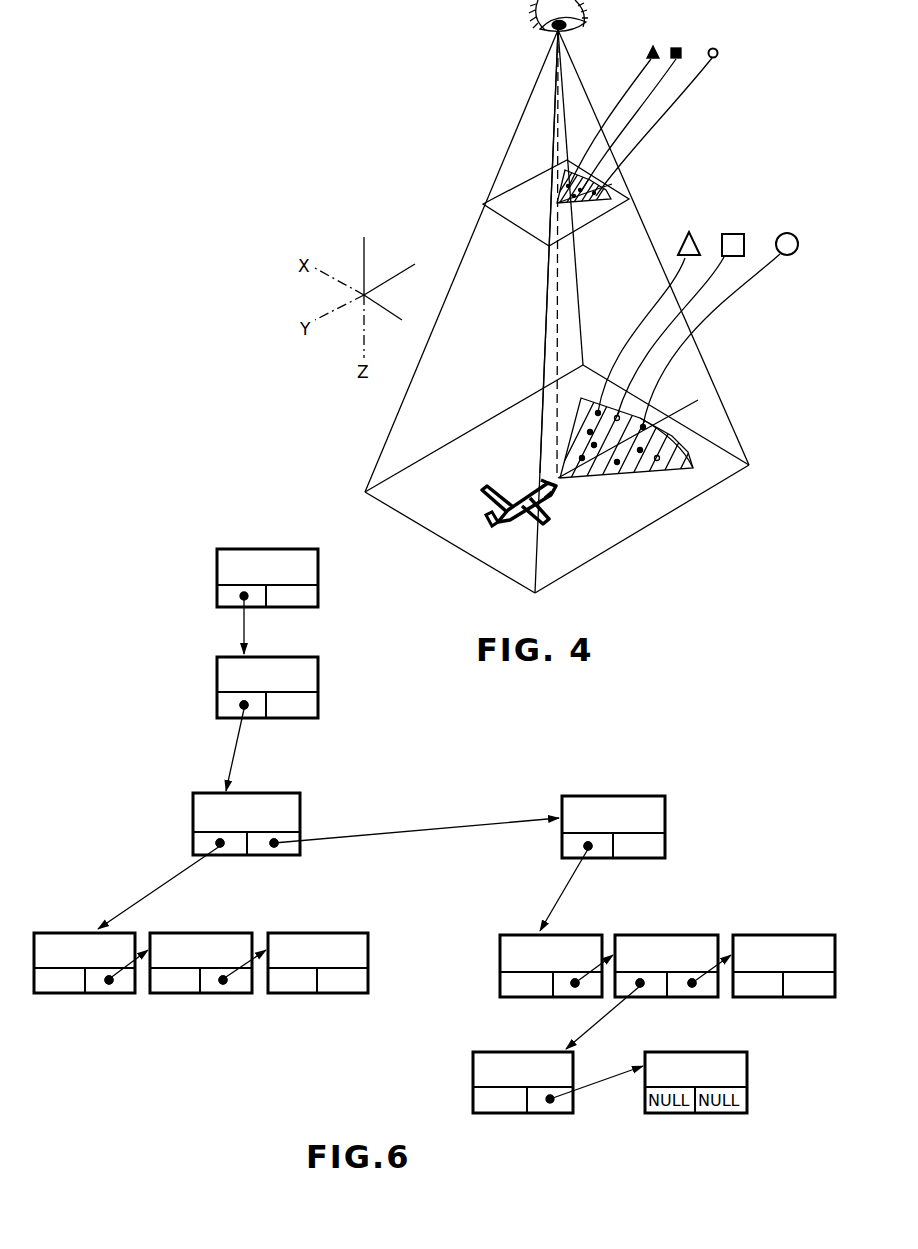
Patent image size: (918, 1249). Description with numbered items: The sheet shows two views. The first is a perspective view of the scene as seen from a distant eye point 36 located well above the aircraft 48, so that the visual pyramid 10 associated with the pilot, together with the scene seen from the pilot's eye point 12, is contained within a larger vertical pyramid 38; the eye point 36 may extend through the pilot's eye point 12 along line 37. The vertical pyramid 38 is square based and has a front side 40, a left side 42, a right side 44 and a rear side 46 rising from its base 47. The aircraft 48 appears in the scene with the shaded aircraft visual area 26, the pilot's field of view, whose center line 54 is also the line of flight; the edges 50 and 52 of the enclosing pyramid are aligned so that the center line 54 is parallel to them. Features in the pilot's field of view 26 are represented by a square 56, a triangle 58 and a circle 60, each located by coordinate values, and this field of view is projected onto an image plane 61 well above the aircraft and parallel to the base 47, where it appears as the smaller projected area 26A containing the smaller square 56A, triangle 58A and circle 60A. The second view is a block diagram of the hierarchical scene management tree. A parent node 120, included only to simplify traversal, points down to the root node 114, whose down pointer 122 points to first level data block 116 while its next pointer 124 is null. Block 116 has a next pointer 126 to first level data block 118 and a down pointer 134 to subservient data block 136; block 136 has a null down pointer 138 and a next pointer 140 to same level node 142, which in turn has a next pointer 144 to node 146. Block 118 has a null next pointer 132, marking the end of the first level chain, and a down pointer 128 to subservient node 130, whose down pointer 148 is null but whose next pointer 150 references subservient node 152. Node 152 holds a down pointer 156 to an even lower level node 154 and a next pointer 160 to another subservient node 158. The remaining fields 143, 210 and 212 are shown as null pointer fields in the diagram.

In FIG. 4, the visual pyramid 10 is at (582, 387).
In FIG. 4, the pilot's eye point 12 is at (559, 484).
In FIG. 4, the aircraft visual area 26 is at (645, 470).
In FIG. 4, the projected field of view 26A is at (612, 176).
In FIG. 4, the eye point 36 is at (576, 22).
In FIG. 4, the line 37 is at (562, 325).
In FIG. 4, the vertical pyramid 38 is at (669, 230).
In FIG. 4, the front side 40 is at (686, 424).
In FIG. 4, the left side 42 is at (434, 333).
In FIG. 4, the right side 44 is at (688, 347).
In FIG. 4, the rear side 46 is at (417, 490).
In FIG. 4, the base 47 is at (547, 570).
In FIG. 4, the aircraft 48 is at (494, 527).
In FIG. 4, the edge 50 is at (470, 432).
In FIG. 4, the edge 52 is at (587, 562).
In FIG. 4, the center line 54 is at (684, 416).
In FIG. 4, the square 56 is at (742, 240).
In FIG. 4, the triangle 58 is at (701, 238).
In FIG. 4, the circle 60 is at (784, 238).
In FIG. 4, the smaller square 56A is at (676, 47).
In FIG. 4, the smaller triangle 58A is at (655, 47).
In FIG. 4, the smaller circle 60A is at (714, 59).
In FIG. 4, the image plane 61 is at (504, 205).
In FIG. 6, the root node data block 114 is at (232, 677).
In FIG. 6, the first level data block 116 is at (280, 813).
In FIG. 6, the first level data block 118 is at (645, 815).
In FIG. 6, the parent node 120 is at (238, 573).
In FIG. 6, the down pointer 122 is at (256, 714).
In FIG. 6, the next pointer 124 is at (313, 705).
In FIG. 6, the next pointer 126 is at (290, 850).
In FIG. 6, the down pointer 128 is at (568, 847).
In FIG. 6, the subservient node 130 is at (520, 923).
In FIG. 6, the next pointer 132 is at (662, 843).
In FIG. 6, the down pointer 134 is at (231, 851).
In FIG. 6, the subservient data block 136 is at (48, 941).
In FIG. 6, the down pointer 138 is at (42, 996).
In FIG. 6, the next pointer 140 is at (120, 991).
In FIG. 6, the subservient node 142 is at (174, 941).
In FIG. 6, the null pointer field 143 is at (190, 995).
In FIG. 6, the next pointer 144 is at (240, 993).
In FIG. 6, the node 146 is at (343, 941).
In FIG. 6, the down pointer 148 is at (512, 997).
In FIG. 6, the next pointer 150 is at (590, 995).
In FIG. 6, the subservient node 152 is at (655, 943).
In FIG. 6, the lower level node 154 is at (530, 1059).
In FIG. 6, the down pointer 156 is at (652, 995).
In FIG. 6, the subservient node 158 is at (765, 943).
In FIG. 6, the next pointer 160 is at (702, 995).
In FIG. 6, the null pointer field 210 is at (305, 995).
In FIG. 6, the null pointer field 212 is at (360, 995).